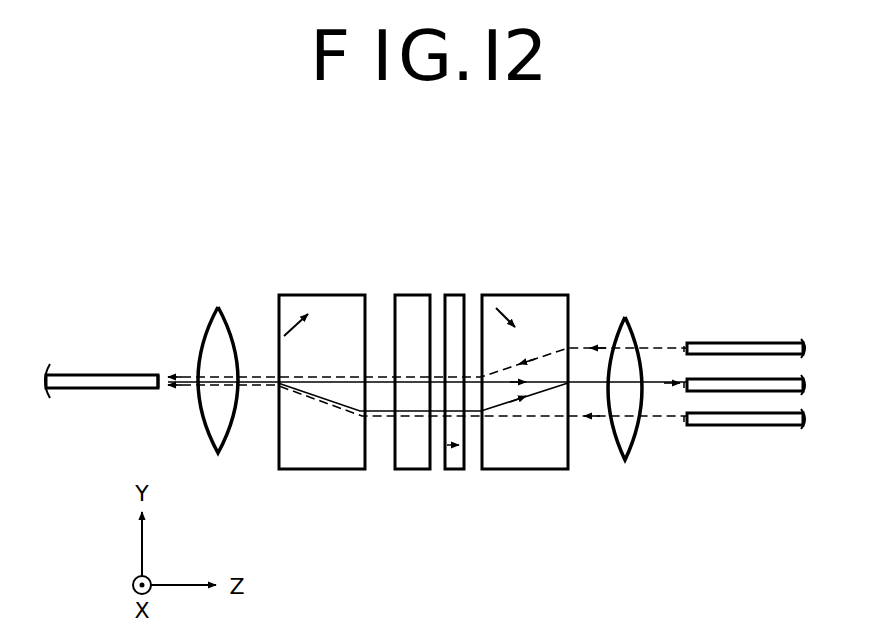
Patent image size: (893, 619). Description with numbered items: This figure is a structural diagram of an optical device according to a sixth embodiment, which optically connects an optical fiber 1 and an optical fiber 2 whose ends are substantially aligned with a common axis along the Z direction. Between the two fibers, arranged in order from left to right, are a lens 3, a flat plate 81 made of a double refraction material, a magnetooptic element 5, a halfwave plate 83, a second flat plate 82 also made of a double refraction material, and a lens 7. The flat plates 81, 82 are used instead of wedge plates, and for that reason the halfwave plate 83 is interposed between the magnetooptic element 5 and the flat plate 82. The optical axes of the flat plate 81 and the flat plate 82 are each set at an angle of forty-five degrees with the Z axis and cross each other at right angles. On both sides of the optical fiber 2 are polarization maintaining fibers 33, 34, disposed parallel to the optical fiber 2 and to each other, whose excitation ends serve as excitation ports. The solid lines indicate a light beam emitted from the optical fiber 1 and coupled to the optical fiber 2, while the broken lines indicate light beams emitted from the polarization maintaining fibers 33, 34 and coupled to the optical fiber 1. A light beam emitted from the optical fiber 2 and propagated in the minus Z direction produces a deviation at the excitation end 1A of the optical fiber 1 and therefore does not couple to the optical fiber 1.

The optical fiber 1 is at (97, 389).
The excitation end 1A is at (162, 389).
The lens 3 is at (212, 316).
The flat plate 81 is at (309, 294).
The magnetooptic element 5 is at (408, 294).
The halfwave plate 83 is at (456, 294).
The flat plate 82 is at (530, 294).
The lens 7 is at (630, 322).
The polarization maintaining fiber 33 is at (743, 343).
The optical fiber 2 is at (777, 378).
The polarization maintaining fiber 34 is at (748, 426).